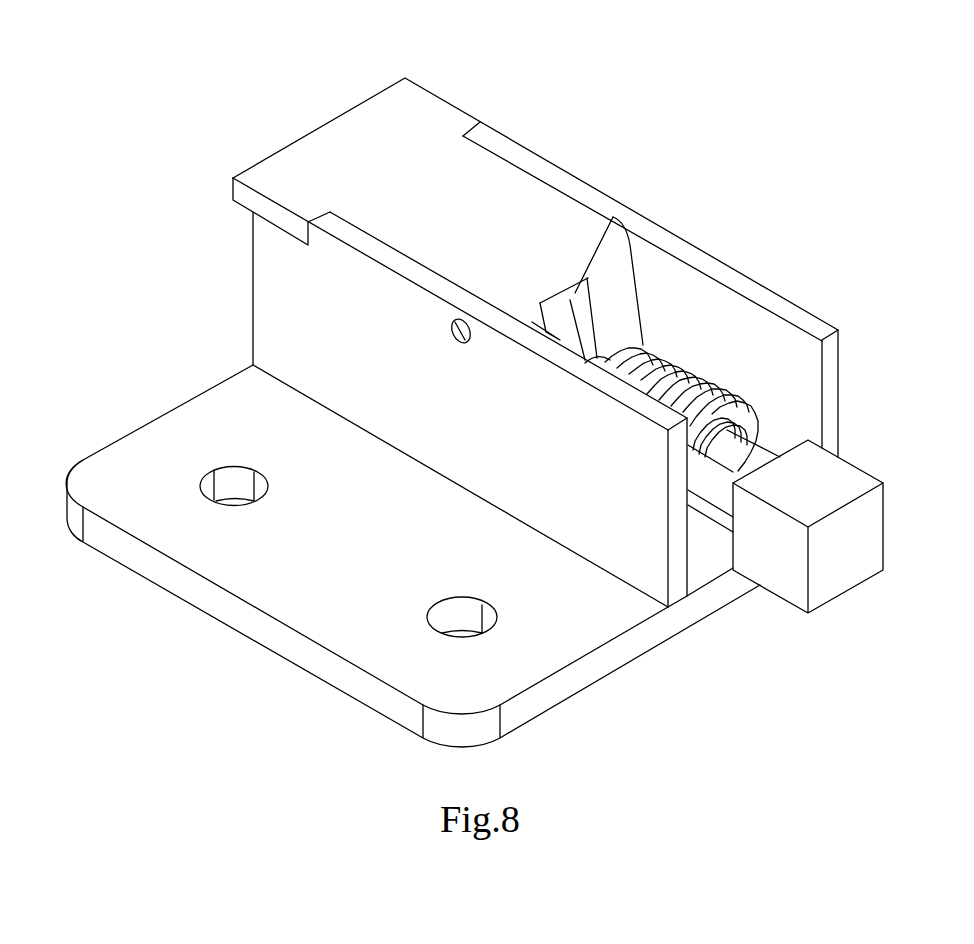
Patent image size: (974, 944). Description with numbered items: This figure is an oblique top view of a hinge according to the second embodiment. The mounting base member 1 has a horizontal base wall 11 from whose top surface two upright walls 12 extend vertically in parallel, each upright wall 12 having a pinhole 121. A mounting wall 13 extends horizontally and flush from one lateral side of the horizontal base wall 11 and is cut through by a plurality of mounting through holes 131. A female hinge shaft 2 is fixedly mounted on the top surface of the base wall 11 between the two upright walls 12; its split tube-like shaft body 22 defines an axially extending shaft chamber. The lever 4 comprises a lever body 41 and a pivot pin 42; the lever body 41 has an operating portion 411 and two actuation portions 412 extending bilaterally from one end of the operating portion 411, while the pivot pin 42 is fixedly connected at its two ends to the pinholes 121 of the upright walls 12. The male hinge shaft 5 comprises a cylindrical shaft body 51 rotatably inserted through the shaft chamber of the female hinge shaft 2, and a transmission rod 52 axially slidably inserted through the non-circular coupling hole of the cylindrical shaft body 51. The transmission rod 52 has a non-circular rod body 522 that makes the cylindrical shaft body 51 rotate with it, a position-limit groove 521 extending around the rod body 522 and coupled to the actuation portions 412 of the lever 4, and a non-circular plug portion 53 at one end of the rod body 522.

The mounting base member 1 is at (213, 335).
The horizontal base wall 11 is at (710, 560).
The upright wall 12 is at (250, 283).
The pinhole 121 is at (452, 325).
The mounting wall 13 is at (118, 465).
The mounting through hole 131 is at (225, 482).
The female hinge shaft 2 is at (703, 357).
The split tube-like shaft body 22 is at (737, 405).
The lever 4 is at (272, 137).
The lever body 41 is at (505, 178).
The operating portion 411 is at (365, 118).
The actuation portion 412 is at (623, 317).
The pivot pin 42 is at (454, 336).
The male hinge shaft 5 is at (885, 479).
The cylindrical shaft body 51 is at (733, 407).
The transmission rod 52 is at (687, 470).
The position-limit groove 521 is at (558, 327).
The non-circular rod body 522 is at (705, 493).
The non-circular plug portion 53 is at (876, 537).